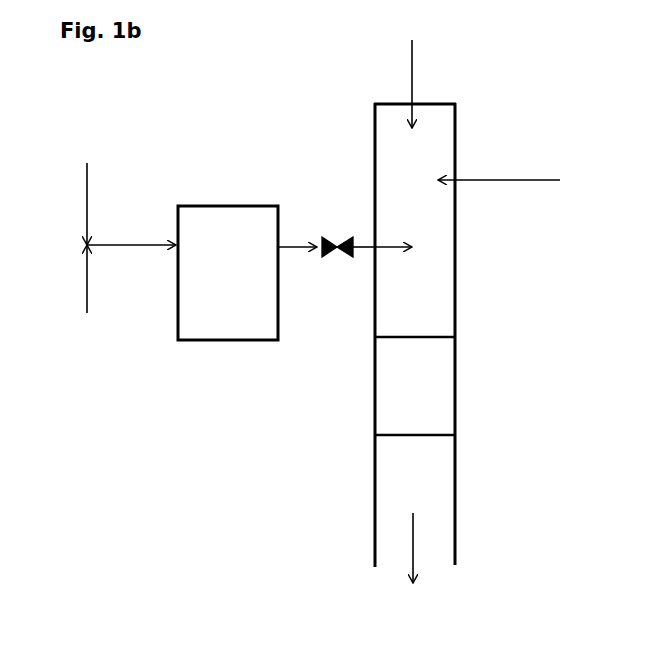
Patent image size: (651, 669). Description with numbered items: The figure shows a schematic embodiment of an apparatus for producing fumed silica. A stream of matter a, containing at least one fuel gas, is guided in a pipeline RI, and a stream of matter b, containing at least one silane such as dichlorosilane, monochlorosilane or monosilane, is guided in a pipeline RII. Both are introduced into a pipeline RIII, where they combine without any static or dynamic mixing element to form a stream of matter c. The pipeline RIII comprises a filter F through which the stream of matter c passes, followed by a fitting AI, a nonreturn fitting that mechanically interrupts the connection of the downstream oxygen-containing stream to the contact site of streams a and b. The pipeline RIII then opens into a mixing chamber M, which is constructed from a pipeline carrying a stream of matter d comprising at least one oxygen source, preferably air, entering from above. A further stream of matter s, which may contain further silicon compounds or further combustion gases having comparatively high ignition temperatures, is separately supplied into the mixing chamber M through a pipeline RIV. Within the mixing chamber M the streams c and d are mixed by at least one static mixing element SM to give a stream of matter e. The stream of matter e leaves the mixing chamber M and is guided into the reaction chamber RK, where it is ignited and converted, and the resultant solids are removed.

The stream of matter a is at (74, 200).
The stream of matter b is at (75, 292).
The stream of matter c is at (231, 232).
The stream of matter d is at (410, 71).
The stream of matter e is at (414, 515).
The stream of matter s is at (511, 185).
The pipeline RI is at (35, 194).
The pipeline RII is at (35, 296).
The pipeline RIII is at (152, 296).
The pipeline RIV is at (506, 156).
The fitting AI is at (333, 270).
The filter F is at (228, 273).
The static mixing element SM is at (415, 386).
The mixing chamber M is at (473, 105).
The reaction chamber RK is at (415, 620).